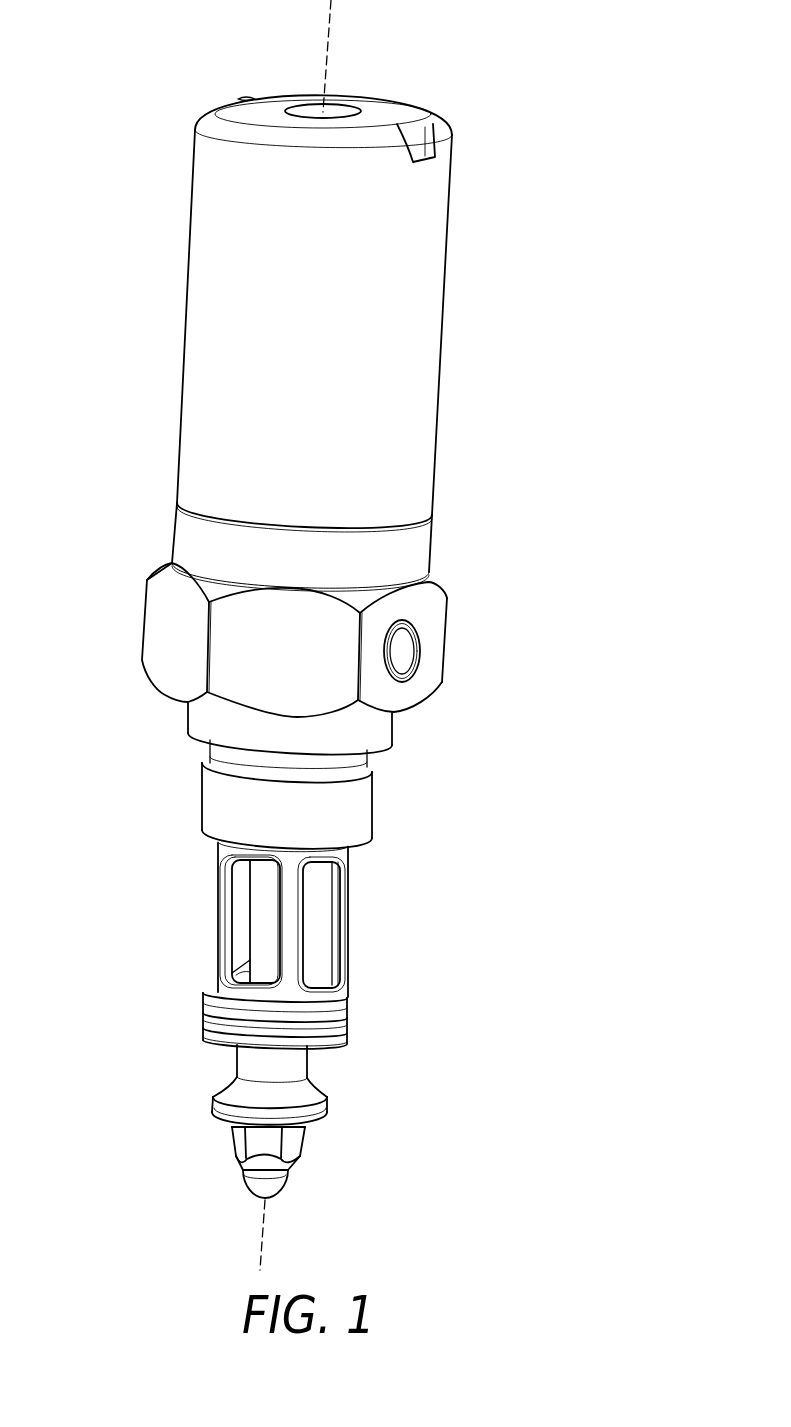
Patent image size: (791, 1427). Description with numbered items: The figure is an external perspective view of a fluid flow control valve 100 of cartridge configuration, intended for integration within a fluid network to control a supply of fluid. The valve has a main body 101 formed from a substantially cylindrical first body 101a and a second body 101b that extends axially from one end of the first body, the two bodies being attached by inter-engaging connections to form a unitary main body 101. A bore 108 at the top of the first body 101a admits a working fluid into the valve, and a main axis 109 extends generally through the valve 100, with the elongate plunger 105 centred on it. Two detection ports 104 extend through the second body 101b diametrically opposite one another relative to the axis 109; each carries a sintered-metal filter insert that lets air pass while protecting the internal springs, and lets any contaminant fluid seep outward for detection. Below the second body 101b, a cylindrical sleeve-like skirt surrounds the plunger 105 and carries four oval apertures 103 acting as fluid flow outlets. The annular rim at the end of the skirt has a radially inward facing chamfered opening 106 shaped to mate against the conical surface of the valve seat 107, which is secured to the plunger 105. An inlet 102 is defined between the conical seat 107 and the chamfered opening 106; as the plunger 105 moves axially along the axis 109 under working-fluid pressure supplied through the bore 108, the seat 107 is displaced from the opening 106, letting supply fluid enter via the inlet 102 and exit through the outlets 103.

The fluid flow control valve 100 is at (151, 119).
The main body 101 is at (441, 353).
The first body 101a is at (436, 248).
The second body 101b is at (422, 551).
The inlet 102 is at (215, 1048).
The oval apertures 103 is at (322, 912).
The detection ports 104 is at (420, 650).
The plunger 105 is at (263, 922).
The chamfered opening 106 is at (327, 1051).
The valve seat 107 is at (305, 1093).
The bore 108 is at (298, 109).
The main axis 109 is at (330, 22).